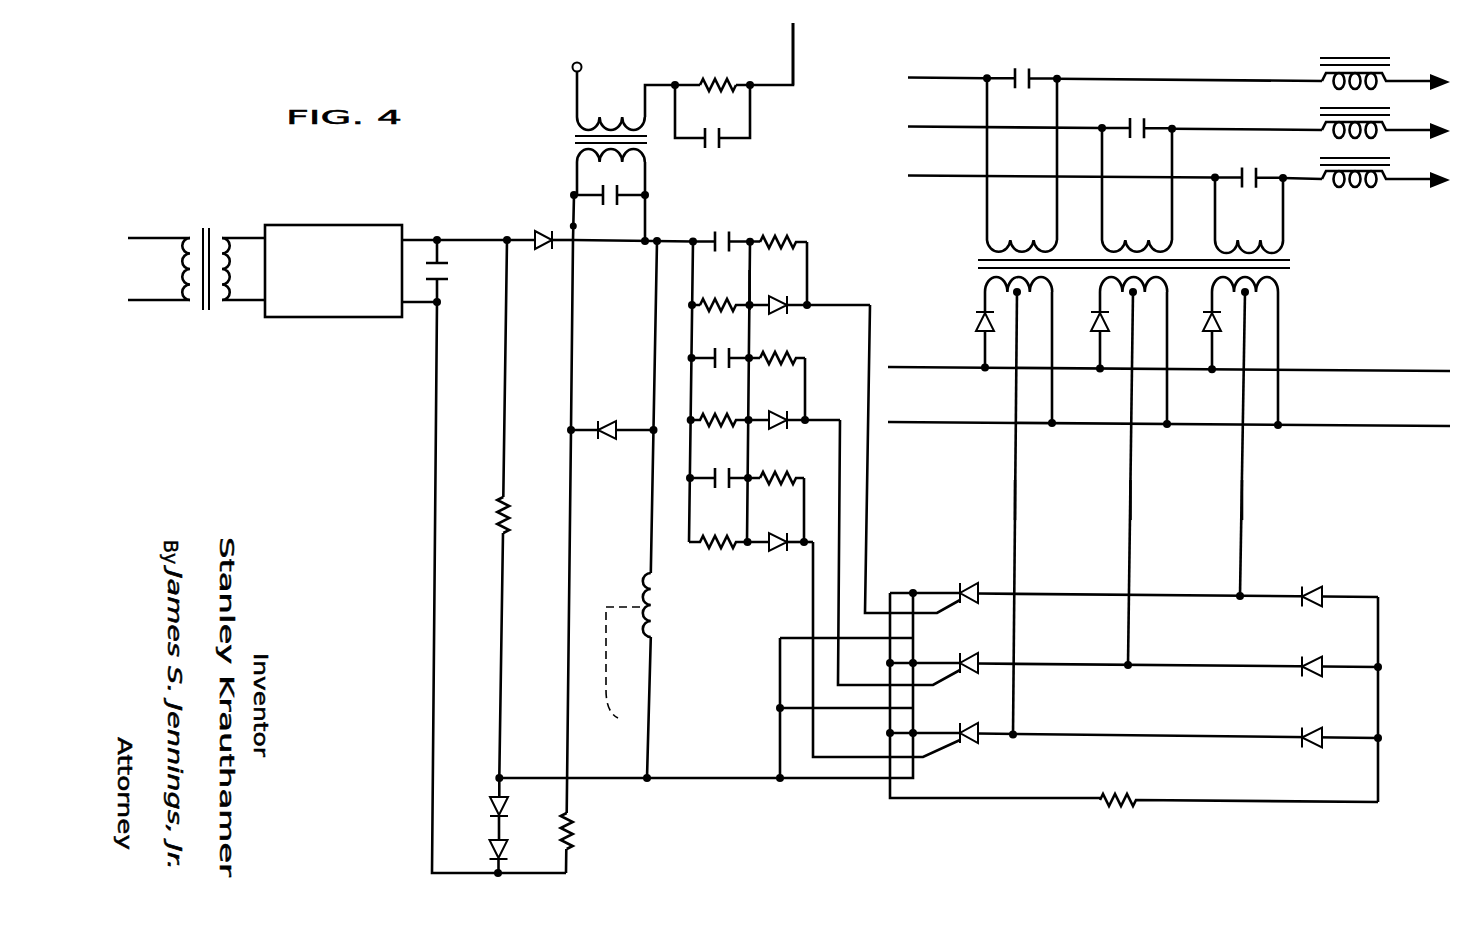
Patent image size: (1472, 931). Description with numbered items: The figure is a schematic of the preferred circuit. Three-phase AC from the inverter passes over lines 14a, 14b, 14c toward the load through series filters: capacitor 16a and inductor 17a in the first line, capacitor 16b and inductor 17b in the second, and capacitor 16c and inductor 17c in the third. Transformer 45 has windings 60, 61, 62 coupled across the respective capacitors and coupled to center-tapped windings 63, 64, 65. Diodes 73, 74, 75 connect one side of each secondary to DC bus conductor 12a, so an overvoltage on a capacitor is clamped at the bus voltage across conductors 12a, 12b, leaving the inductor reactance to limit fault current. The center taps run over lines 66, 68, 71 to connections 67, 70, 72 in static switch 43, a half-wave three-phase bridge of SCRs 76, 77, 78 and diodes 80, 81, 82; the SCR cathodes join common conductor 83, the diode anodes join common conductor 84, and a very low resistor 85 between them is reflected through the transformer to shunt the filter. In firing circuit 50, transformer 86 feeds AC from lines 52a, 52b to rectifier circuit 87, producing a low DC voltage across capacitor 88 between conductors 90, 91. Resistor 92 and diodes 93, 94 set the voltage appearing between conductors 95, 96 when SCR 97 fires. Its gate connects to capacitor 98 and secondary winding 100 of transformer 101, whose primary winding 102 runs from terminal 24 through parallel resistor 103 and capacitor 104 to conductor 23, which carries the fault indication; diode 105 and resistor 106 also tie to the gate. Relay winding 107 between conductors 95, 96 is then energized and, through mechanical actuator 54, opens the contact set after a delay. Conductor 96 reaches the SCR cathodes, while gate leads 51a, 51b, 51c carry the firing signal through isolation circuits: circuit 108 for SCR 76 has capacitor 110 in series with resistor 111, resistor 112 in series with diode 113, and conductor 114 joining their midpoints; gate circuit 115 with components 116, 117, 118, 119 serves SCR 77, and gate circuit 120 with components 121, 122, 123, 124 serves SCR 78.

The DC bus conductor 12a is at (1169, 355).
The DC bus conductor 12b is at (1169, 409).
The line 14a is at (1115, 66).
The line 14b is at (1115, 116).
The line 14c is at (1115, 165).
The capacitor 16a is at (1022, 67).
The capacitor 16b is at (1137, 116).
The capacitor 16c is at (1249, 166).
The inductor 17a is at (1386, 76).
The inductor 17b is at (1389, 126).
The inductor 17c is at (1389, 175).
The line 23 is at (793, 48).
The terminal 24 is at (562, 76).
The static switch 43 is at (1120, 886).
The transformer 45 is at (1338, 280).
The firing circuit 50 is at (748, 881).
The line 51a is at (868, 502).
The line 51b is at (839, 556).
The line 51c is at (813, 616).
The line 52a is at (158, 225).
The line 52b is at (158, 313).
The mechanical actuator 54 is at (619, 679).
The winding 60 is at (1022, 165).
The winding 61 is at (1137, 190).
The winding 62 is at (1249, 216).
The winding 63 is at (1020, 352).
The winding 64 is at (1135, 352).
The winding 65 is at (1247, 353).
The line 66 is at (1018, 500).
The connection 67 is at (1010, 523).
The line 68 is at (1134, 503).
The connection 70 is at (1128, 490).
The line 71 is at (1246, 503).
The connection 72 is at (1242, 455).
The diode 73 is at (969, 332).
The diode 74 is at (1084, 332).
The diode 75 is at (1196, 332).
The SCR 76 is at (1145, 582).
The SCR 77 is at (1134, 652).
The SCR 78 is at (1134, 723).
The diode 80 is at (1312, 584).
The diode 81 is at (1312, 654).
The diode 82 is at (1312, 726).
The common conductor 83 is at (882, 790).
The common conductor 84 is at (1378, 717).
The resistor 85 is at (1239, 789).
The transformer 86 is at (223, 261).
The rectifier circuit 87 is at (333, 256).
The capacitor 88 is at (437, 271).
The conductor 90 is at (477, 240).
The conductor 91 is at (452, 587).
The resistor 92 is at (517, 509).
The diode 93 is at (481, 807).
The diode 94 is at (509, 857).
The conductor 95 is at (682, 239).
The conductor 96 is at (745, 778).
The SCR 97 is at (572, 226).
The capacitor 98 is at (609, 212).
The secondary winding 100 is at (631, 172).
The transformer 101 is at (592, 141).
The primary winding 102 is at (632, 116).
The resistor 103 is at (732, 57).
The capacitor 104 is at (712, 128).
The diode 105 is at (612, 339).
The resistor 106 is at (585, 651).
The relay winding 107 is at (668, 511).
The circuit 108 is at (786, 201).
The capacitor 110 is at (733, 240).
The resistor 111 is at (782, 230).
The resistor 112 is at (733, 302).
The diode 113 is at (784, 312).
The conductor 114 is at (752, 275).
The gate circuit 115 is at (856, 398).
The capacitor 116 is at (704, 356).
The resistor 117 is at (786, 356).
The resistor 118 is at (720, 418).
The diode 119 is at (778, 419).
The gate circuit 120 is at (768, 584).
The capacitor 121 is at (702, 476).
The resistor 122 is at (772, 476).
The resistor 123 is at (729, 530).
The diode 124 is at (785, 531).